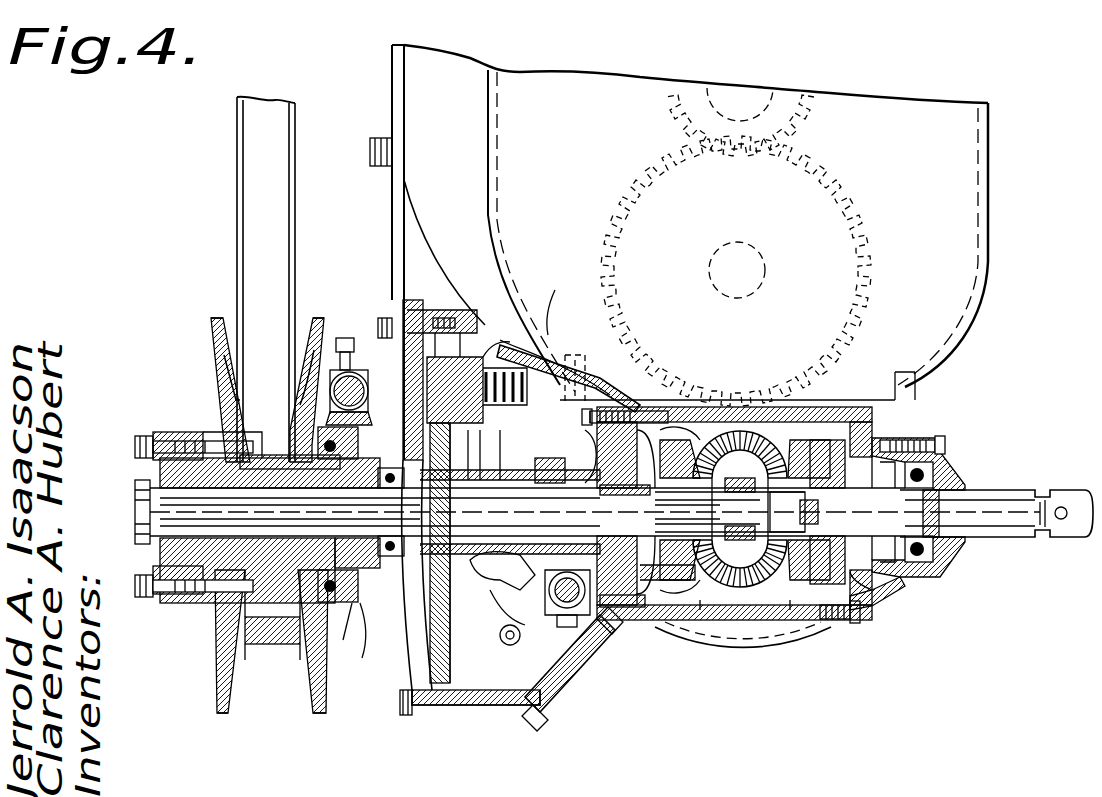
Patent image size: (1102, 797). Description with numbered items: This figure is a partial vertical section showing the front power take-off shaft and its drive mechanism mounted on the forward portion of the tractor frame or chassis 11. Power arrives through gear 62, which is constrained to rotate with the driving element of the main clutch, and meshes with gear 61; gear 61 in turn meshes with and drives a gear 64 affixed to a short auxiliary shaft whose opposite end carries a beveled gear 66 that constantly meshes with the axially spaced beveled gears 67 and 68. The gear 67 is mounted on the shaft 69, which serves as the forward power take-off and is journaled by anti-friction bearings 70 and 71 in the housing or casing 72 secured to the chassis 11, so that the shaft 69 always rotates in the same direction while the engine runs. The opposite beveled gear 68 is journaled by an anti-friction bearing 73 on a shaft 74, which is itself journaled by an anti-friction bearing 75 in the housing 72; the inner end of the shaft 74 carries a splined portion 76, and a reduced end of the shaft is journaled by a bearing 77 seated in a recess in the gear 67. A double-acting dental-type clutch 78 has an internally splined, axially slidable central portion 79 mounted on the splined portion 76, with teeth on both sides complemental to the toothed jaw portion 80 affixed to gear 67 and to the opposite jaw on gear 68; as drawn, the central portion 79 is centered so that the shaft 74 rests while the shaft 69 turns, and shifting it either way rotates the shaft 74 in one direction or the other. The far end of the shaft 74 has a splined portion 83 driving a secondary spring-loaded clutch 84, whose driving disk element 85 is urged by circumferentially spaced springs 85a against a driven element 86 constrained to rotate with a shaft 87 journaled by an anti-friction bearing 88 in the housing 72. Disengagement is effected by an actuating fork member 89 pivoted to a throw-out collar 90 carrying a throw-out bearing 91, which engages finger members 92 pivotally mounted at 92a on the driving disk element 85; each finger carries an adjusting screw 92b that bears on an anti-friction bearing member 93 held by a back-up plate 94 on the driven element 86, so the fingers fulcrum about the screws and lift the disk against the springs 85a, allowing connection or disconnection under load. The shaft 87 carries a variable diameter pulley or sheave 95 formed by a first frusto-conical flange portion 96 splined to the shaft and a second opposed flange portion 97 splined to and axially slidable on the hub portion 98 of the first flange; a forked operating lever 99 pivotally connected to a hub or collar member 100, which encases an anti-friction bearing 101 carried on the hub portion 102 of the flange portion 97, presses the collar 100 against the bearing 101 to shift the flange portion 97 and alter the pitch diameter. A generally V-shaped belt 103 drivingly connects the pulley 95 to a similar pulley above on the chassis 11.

The frame or chassis 11 is at (990, 200).
The gear 61 is at (875, 252).
The gear 62 is at (812, 116).
The gear 64 is at (835, 430).
The beveled gear 66 is at (778, 440).
The beveled gear 67 is at (800, 578).
The beveled gear 68 is at (678, 415).
The shaft 69 is at (1003, 495).
The anti-friction bearing 70 is at (917, 506).
The anti-friction bearing 71 is at (918, 565).
The housing or casing 72 is at (898, 595).
The anti-friction bearing 73 is at (663, 537).
The shaft 74 is at (690, 580).
The anti-friction bearing 75 is at (640, 605).
The splined portion 76 is at (778, 584).
The bearing 77 is at (820, 595).
The double-acting dental-type clutch 78 is at (722, 590).
The axially slidable portion 79 is at (752, 590).
The toothed jaw portion 80 is at (745, 430).
The splined portion 83 is at (505, 492).
The secondary spring-loaded clutch 84 is at (528, 358).
The driving disk element 85 is at (488, 455).
The springs 85a is at (554, 299).
The driven element 86 is at (440, 330).
The shaft 87 is at (712, 438).
The anti-friction bearing 88 is at (372, 600).
The actuating fork member 89 is at (565, 610).
The throw-out collar 90 is at (580, 483).
The throw-out bearing 91 is at (548, 464).
The finger members 92 is at (502, 583).
The pivot 92a is at (515, 645).
The adjusting screw 92b is at (565, 665).
The anti-friction bearing member 93 is at (508, 625).
The back-up plate 94 is at (487, 455).
The variable diameter pulley or sheave 95 is at (198, 354).
The first frusto-conical flange portion 96 is at (218, 393).
The second frusto-conical flange portion 97 is at (322, 330).
The hub portion 98 is at (282, 460).
The forked operating lever 99 is at (340, 375).
The hub or collar member 100 is at (360, 615).
The anti-friction bearing 101 is at (305, 658).
The hub portion 102 is at (372, 545).
The V-shaped belt 103 is at (258, 228).